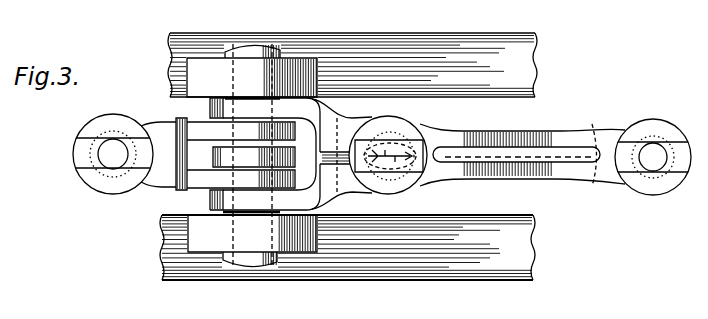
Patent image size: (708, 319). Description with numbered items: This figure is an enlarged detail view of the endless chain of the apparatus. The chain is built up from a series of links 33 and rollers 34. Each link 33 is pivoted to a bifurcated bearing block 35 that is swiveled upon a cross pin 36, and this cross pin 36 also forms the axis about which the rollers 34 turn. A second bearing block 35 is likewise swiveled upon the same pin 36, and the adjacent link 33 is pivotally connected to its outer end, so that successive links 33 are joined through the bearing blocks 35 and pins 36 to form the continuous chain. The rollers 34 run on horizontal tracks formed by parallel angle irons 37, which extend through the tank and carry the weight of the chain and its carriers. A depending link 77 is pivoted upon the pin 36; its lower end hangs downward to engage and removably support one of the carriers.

The link 33 is at (586, 127).
The roller 34 is at (186, 58).
The bifurcated bearing block 35 is at (329, 116).
The cross pin 36 is at (251, 44).
The angle iron 37 is at (463, 72).
The depending link 77 is at (245, 155).